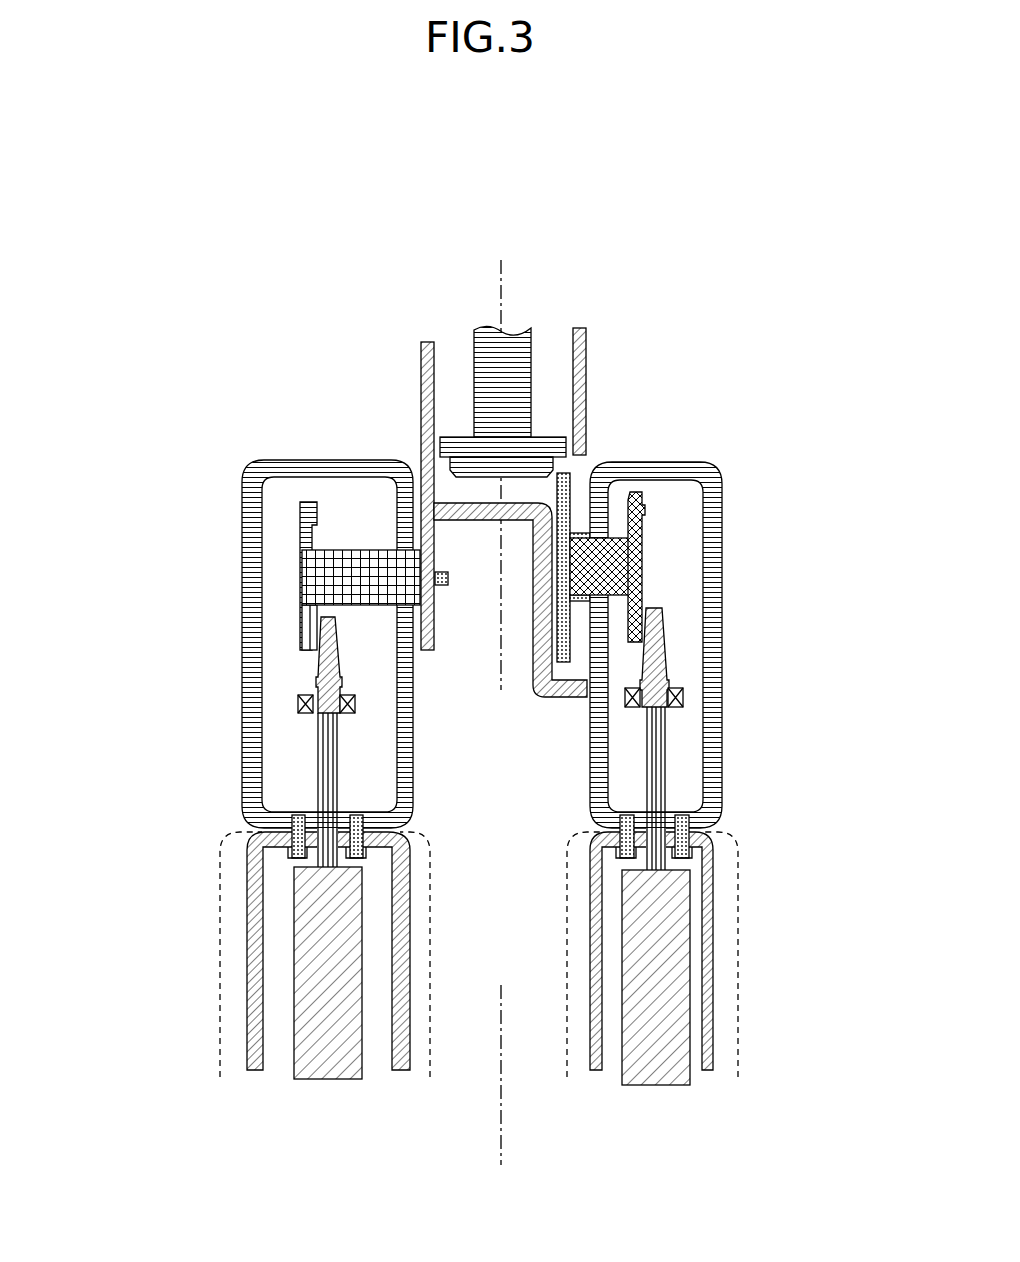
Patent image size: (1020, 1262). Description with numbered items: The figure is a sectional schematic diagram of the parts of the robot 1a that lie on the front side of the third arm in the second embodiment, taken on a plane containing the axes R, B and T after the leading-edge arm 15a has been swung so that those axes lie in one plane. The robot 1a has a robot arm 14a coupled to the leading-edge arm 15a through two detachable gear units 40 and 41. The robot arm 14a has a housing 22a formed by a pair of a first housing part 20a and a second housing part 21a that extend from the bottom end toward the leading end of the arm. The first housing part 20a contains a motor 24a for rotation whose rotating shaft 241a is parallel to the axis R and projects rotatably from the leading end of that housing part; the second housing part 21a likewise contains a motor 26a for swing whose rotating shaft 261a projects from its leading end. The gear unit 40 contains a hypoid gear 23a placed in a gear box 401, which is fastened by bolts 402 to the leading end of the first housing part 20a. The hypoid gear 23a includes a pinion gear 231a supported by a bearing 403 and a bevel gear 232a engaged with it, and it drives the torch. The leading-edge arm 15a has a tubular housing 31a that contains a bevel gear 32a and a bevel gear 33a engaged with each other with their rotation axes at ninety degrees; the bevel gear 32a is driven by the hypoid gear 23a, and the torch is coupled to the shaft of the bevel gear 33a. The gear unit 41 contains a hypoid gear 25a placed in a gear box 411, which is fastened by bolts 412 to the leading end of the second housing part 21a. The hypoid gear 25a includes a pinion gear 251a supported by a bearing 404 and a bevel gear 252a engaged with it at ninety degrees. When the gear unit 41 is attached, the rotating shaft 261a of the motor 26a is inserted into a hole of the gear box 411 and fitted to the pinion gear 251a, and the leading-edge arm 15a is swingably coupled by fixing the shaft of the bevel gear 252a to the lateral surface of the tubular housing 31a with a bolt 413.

The robot 1a is at (406, 181).
The robot arm 14a is at (145, 820).
The leading-edge arm 15a is at (628, 322).
The first housing part 20a is at (738, 1022).
The second housing part 21a is at (220, 1058).
The housing 22a is at (253, 1000).
The hypoid gear 23a is at (736, 572).
The pinion gear 231a is at (643, 650).
The bevel gear 232a is at (640, 540).
The motor for rotation 24a is at (680, 918).
The rotating shaft 241a is at (655, 762).
The hypoid gear 25a is at (244, 607).
The pinion gear 251a is at (318, 668).
The bevel gear 252a is at (300, 540).
The motor for swing 26a is at (296, 928).
The rotating shaft 261a is at (330, 760).
The tubular housing 31a is at (421, 400).
The bevel gear 32a is at (555, 635).
The bevel gear 33a is at (474, 355).
The gear unit 40 is at (696, 604).
The gear box 401 is at (660, 462).
The bolts 402 is at (597, 847).
The bearing 403 is at (685, 700).
The bearing 404 is at (298, 705).
The gear unit 41 is at (290, 600).
The gear box 411 is at (330, 458).
The bolts 412 is at (295, 848).
The bolt 413 is at (445, 592).